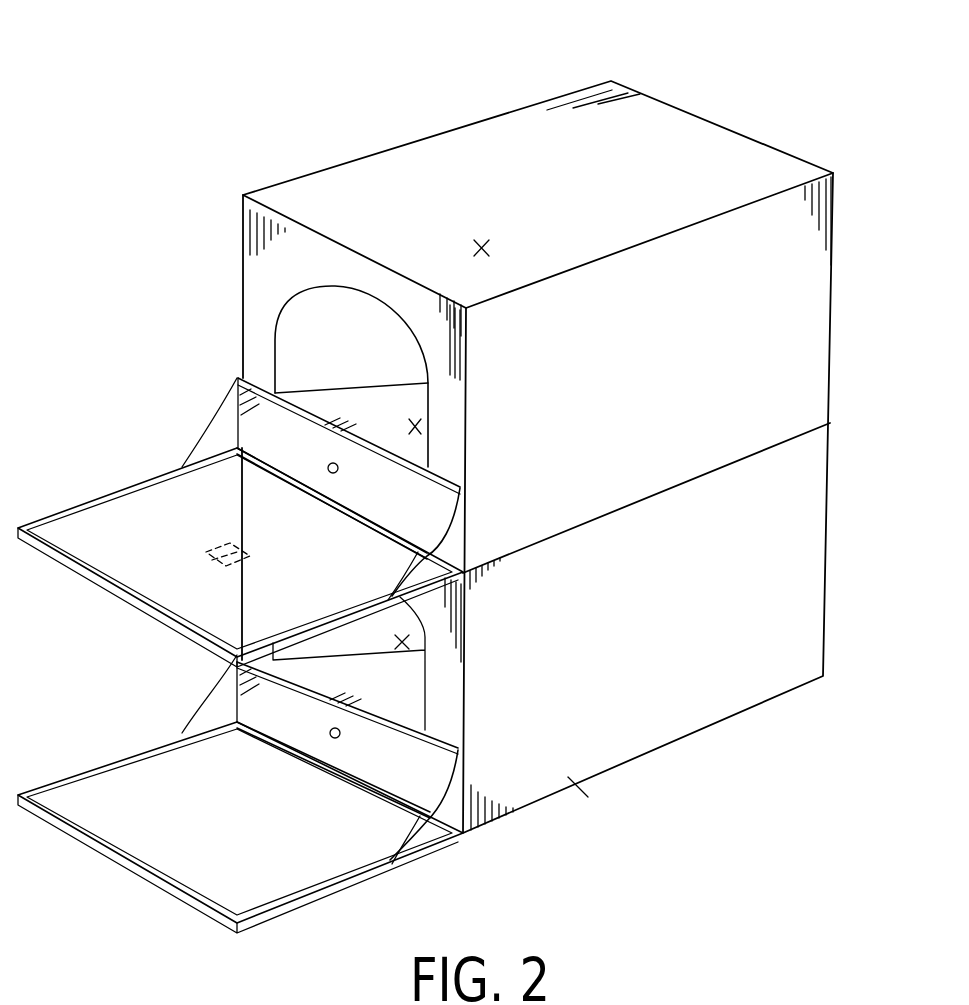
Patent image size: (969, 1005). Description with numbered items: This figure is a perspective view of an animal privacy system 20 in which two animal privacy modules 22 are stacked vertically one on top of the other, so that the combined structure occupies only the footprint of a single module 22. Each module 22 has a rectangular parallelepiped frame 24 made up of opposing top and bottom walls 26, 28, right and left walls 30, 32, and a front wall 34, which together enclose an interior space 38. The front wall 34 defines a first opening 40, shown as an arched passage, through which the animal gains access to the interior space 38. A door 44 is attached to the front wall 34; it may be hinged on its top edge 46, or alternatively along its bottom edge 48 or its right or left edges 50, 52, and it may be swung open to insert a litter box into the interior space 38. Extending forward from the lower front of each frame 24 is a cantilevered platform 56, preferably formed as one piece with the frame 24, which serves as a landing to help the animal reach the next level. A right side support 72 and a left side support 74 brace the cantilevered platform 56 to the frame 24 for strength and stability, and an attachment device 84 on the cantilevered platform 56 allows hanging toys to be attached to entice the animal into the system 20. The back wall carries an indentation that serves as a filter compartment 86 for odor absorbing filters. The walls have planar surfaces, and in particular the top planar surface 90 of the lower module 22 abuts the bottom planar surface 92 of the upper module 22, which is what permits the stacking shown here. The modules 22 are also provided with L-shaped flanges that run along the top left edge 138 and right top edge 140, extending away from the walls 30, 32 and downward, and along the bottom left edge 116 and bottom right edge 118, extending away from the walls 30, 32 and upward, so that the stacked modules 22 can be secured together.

The animal privacy system 20 is at (224, 150).
The animal privacy module 22 is at (694, 98).
The frame 24 is at (231, 367).
The top wall 26 is at (346, 211).
The bottom wall 28 is at (433, 403).
The right wall 30 is at (646, 472).
The left wall 32 is at (325, 667).
The front wall 34 is at (353, 478).
The interior space 38 is at (403, 351).
The first opening 40 is at (343, 298).
The door 44 is at (348, 598).
The top edge 46 is at (285, 397).
The bottom edge 48 is at (340, 512).
The right edge 50 is at (452, 513).
The left edge 52 is at (242, 438).
The cantilevered platform 56 is at (240, 690).
The right side support 72 is at (447, 548).
The left side support 74 is at (230, 432).
The attachment device 84 is at (203, 558).
The filter compartment 86 is at (406, 634).
The top planar surface 90 is at (487, 238).
The bottom planar surface 92 is at (581, 793).
The bottom left edge 116 is at (744, 465).
The bottom right edge 118 is at (233, 443).
The top left edge 138 is at (681, 220).
The right top edge 140 is at (431, 127).